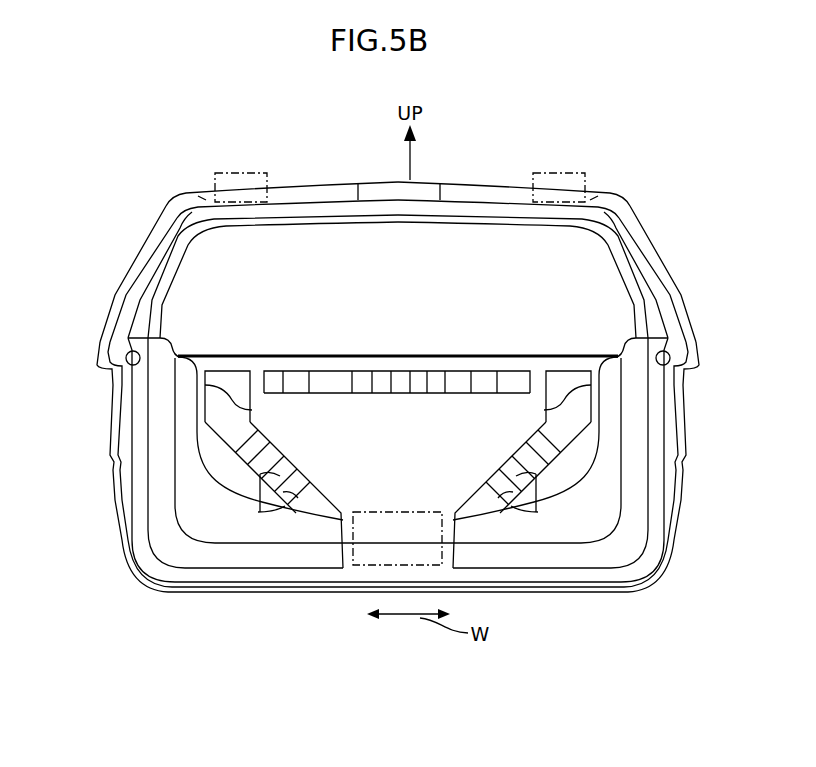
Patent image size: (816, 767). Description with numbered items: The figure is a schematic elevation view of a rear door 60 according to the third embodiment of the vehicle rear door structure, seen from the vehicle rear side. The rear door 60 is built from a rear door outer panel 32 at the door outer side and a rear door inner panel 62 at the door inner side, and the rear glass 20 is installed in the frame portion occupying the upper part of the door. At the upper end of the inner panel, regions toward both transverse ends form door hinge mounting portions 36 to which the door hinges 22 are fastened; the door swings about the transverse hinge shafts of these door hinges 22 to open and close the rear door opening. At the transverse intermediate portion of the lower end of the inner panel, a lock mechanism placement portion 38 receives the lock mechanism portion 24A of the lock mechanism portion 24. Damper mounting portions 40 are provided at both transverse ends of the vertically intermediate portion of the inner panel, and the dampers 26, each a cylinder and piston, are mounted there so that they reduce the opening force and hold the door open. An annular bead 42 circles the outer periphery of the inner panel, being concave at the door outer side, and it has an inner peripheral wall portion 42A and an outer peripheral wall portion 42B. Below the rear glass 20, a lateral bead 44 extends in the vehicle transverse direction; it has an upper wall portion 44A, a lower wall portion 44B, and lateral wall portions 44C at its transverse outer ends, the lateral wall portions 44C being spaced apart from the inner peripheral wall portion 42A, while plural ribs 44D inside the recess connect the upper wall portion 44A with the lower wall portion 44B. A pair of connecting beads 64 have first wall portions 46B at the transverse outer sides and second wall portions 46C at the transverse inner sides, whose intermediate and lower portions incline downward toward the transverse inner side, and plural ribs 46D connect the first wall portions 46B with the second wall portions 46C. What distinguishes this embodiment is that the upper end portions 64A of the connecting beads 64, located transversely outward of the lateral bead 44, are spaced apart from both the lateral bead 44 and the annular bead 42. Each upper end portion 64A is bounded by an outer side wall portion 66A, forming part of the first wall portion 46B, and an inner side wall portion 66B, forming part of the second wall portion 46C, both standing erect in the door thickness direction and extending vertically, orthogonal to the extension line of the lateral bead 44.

The rear glass 20 is at (333, 250).
The door hinges 22 is at (222, 173).
The door hinge mounting portions 36 is at (198, 196).
The annular bead 42 is at (160, 230).
The inner peripheral wall portion 42A is at (185, 503).
The outer peripheral wall portion 42B is at (108, 460).
The rear door 60 is at (715, 215).
The rear door inner panel 62 is at (693, 528).
The rear door outer panel 32 is at (700, 483).
The lock mechanism portion 24 is at (398, 276).
The lock mechanism portion 24A is at (363, 570).
The damper mounting portions 40 is at (132, 352).
The dampers 26 is at (135, 366).
The connecting beads 64 is at (304, 430).
The upper end portions 64A is at (220, 372).
The inner side wall portion 66B is at (238, 372).
The outer side wall portion 66A is at (252, 410).
The second wall portions 46C is at (303, 470).
The first wall portions 46B is at (253, 470).
The ribs 46D is at (268, 503).
The lock mechanism placement portion 38 is at (447, 543).
The lateral bead 44 is at (418, 354).
The upper wall portion 44A is at (460, 371).
The lower wall portion 44B is at (413, 397).
The lateral wall portions 44C is at (273, 371).
The ribs 44D is at (320, 371).